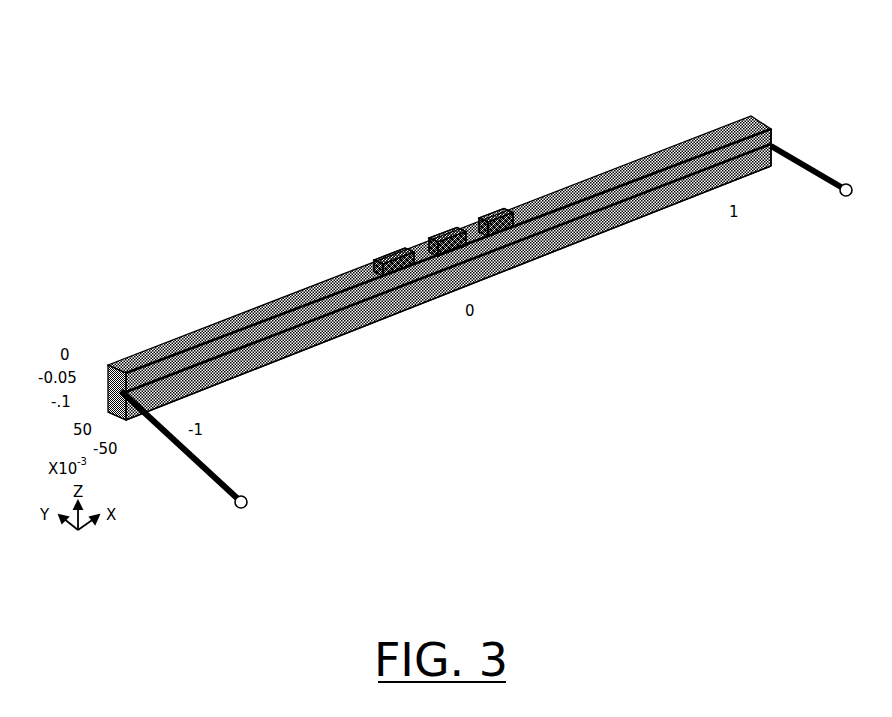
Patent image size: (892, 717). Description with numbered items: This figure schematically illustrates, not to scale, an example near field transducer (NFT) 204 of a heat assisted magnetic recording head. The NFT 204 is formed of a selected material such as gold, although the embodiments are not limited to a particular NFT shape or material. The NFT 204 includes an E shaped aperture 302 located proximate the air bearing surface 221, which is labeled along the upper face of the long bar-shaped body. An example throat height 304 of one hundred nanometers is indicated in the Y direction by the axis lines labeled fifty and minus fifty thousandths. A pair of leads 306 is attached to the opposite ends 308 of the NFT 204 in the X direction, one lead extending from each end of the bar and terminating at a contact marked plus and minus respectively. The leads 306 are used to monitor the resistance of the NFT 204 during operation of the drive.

The near field transducer (NFT) 204 is at (402, 40).
The air bearing surface 221 is at (240, 294).
The E shaped aperture 302 is at (430, 198).
The throat height 304 is at (113, 426).
The leads 306 is at (205, 450).
The opposite ends 308 is at (104, 356).